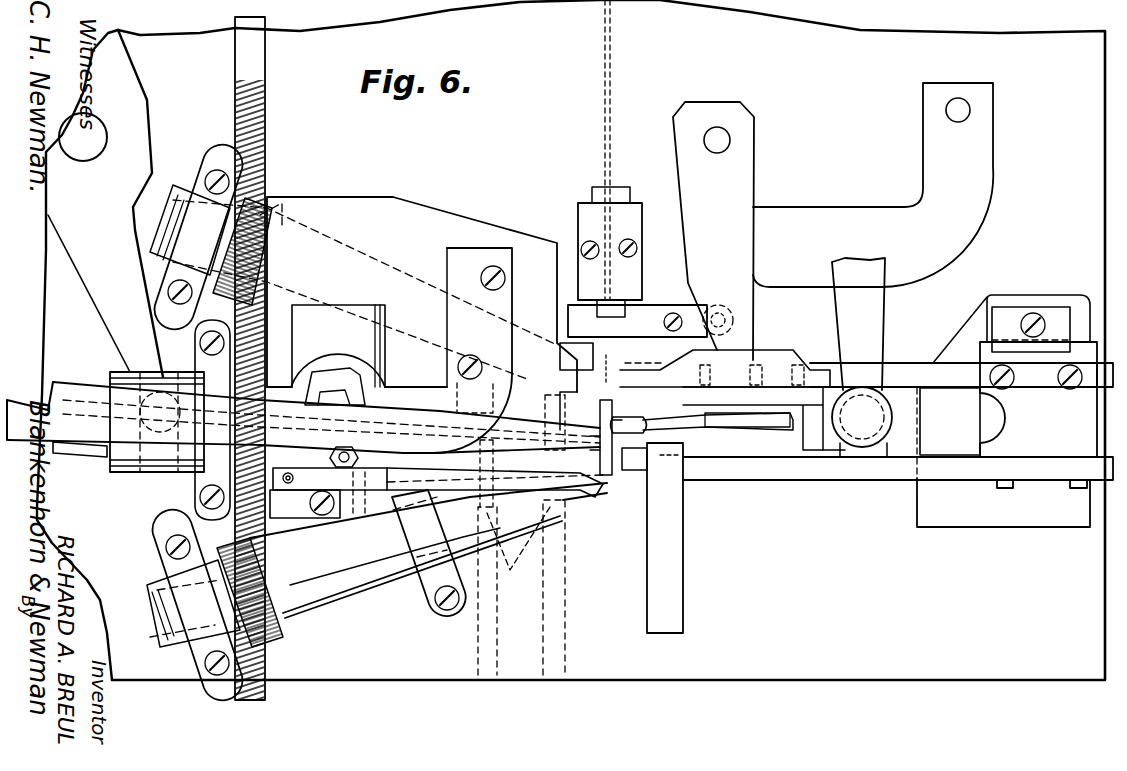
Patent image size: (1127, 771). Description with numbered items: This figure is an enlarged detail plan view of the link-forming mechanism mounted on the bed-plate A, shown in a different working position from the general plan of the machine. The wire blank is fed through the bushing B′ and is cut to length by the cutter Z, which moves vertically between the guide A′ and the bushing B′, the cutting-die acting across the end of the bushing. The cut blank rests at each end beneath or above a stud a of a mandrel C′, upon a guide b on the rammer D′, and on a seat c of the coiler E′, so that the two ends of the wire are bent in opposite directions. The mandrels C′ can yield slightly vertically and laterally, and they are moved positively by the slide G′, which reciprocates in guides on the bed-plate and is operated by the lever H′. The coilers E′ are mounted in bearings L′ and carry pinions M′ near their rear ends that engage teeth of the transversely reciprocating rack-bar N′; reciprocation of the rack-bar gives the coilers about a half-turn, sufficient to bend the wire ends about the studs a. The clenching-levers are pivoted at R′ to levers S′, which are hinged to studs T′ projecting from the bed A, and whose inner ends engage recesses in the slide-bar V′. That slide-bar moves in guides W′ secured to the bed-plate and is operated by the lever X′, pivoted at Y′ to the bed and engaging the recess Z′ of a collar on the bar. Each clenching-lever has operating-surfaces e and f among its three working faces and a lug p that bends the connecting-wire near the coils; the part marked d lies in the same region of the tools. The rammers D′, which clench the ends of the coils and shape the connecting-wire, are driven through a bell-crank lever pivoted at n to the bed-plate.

The bed-plate A is at (608, 340).
The lever X′ is at (100, 355).
The pivot Y′ is at (83, 137).
The rack-bar N′ is at (258, 170).
The pinions M′ is at (262, 250).
The bearings L′ is at (306, 423).
The guides W′ is at (212, 420).
The coiler E′ is at (428, 407).
The studs T′ is at (325, 352).
The levers S′ is at (365, 393).
The slide-bar V′ is at (70, 458).
The recess Z′ is at (152, 472).
The pivot R′ is at (305, 504).
The lug p is at (495, 472).
The mandrels C′ is at (596, 360).
The operating-surface e is at (614, 448).
The seat c is at (635, 460).
The stud a is at (612, 372).
The guide b is at (628, 372).
The pin d is at (603, 483).
The operating-surface f is at (585, 478).
The cutter Z is at (600, 300).
The bushing B′ is at (622, 302).
The guide A′ is at (650, 321).
The pivot n is at (717, 153).
The lever H′ is at (862, 357).
The rammers D′ is at (902, 372).
The slide G′ is at (950, 421).